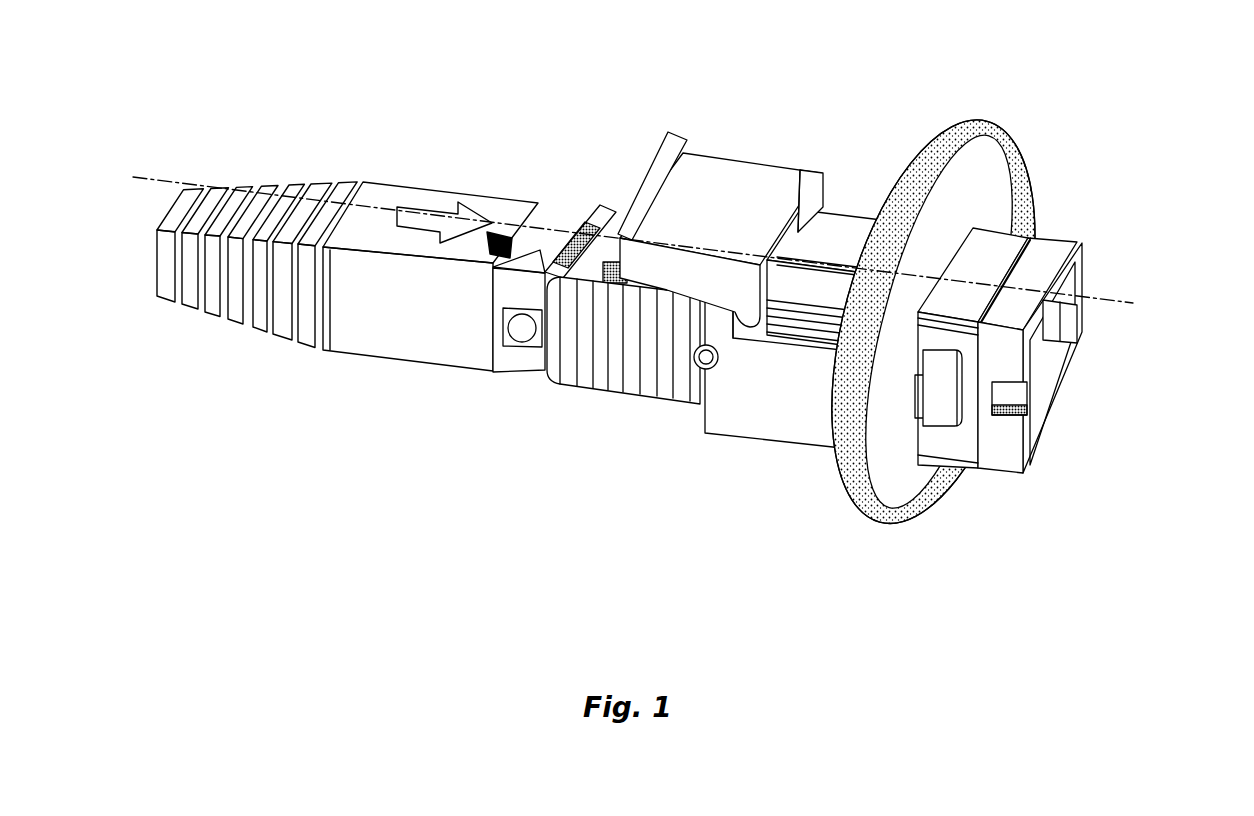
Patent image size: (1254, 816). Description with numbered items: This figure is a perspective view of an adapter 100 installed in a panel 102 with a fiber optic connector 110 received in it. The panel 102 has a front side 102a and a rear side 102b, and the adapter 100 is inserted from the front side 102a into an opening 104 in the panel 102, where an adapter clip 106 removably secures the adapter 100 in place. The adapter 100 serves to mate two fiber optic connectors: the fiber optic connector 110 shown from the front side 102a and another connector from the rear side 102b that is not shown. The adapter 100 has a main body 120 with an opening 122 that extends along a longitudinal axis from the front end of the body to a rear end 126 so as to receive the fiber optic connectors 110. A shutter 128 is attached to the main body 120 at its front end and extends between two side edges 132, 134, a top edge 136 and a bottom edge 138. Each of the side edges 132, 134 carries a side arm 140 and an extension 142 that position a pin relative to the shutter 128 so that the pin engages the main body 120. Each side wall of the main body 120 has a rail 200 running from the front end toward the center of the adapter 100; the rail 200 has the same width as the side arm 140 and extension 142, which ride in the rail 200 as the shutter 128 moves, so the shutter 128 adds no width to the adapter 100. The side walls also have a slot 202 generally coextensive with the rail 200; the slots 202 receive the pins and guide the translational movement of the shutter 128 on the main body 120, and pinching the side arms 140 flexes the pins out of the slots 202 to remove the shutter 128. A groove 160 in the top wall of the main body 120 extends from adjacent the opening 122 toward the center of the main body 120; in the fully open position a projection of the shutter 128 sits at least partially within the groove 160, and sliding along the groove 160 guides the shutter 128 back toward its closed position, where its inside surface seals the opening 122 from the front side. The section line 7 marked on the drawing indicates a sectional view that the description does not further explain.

The section line 7- 7 is at (157, 143).
The adapter 100 is at (787, 599).
The panel 102 is at (882, 538).
The front side 102a is at (835, 521).
The rear side 102b is at (1112, 211).
The opening 104 is at (970, 222).
The adapter clip 106 is at (957, 432).
The fiber optic connector 110 is at (453, 372).
The main body 120 is at (810, 448).
The opening 122 is at (1069, 368).
The rear end 126 is at (1047, 434).
The shutter 128 is at (727, 156).
The side edge 132 is at (828, 190).
The side edge 134 is at (653, 257).
The top edge 136 is at (800, 160).
The bottom edge 138 is at (650, 158).
The side arm 140 is at (697, 282).
The extension 142 is at (750, 327).
The groove 160 is at (840, 248).
The rail 200 is at (813, 323).
The slot 202 is at (790, 327).